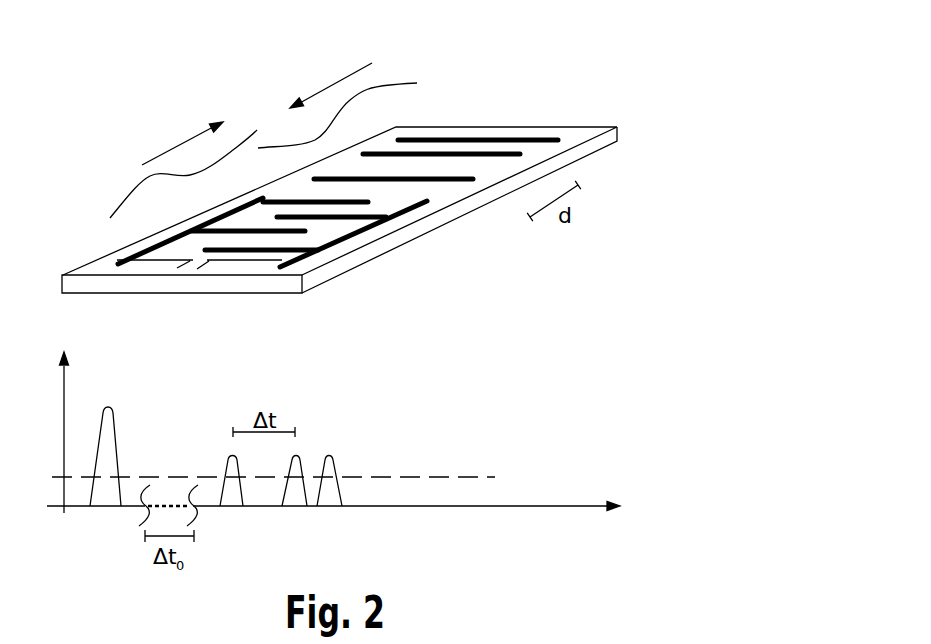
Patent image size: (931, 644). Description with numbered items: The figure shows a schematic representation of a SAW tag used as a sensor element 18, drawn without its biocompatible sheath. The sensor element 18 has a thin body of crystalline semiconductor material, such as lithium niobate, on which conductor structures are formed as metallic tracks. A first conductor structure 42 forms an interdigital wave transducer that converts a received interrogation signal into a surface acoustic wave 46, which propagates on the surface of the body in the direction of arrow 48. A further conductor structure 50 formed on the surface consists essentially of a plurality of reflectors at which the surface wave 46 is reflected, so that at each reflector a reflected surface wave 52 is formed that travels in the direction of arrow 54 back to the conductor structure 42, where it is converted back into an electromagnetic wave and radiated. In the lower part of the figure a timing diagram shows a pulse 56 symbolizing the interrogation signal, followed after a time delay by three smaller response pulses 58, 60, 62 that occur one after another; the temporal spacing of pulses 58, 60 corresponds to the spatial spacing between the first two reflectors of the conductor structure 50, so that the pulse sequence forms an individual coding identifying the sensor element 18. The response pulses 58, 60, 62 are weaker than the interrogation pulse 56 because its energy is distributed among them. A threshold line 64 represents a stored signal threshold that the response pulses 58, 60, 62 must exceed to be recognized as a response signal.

The sensor element 18 is at (598, 126).
The first conductor structure 42 is at (116, 259).
The surface acoustic wave 46 is at (127, 198).
The arrow 48 is at (178, 144).
The further conductor structure 50 is at (472, 134).
The reflected surface wave 52 is at (417, 83).
The arrow 54 is at (343, 79).
The pulse 56 is at (107, 404).
The response pulse 58 is at (232, 505).
The response pulse 60 is at (293, 505).
The response pulse 62 is at (334, 504).
The threshold line 64 is at (461, 476).